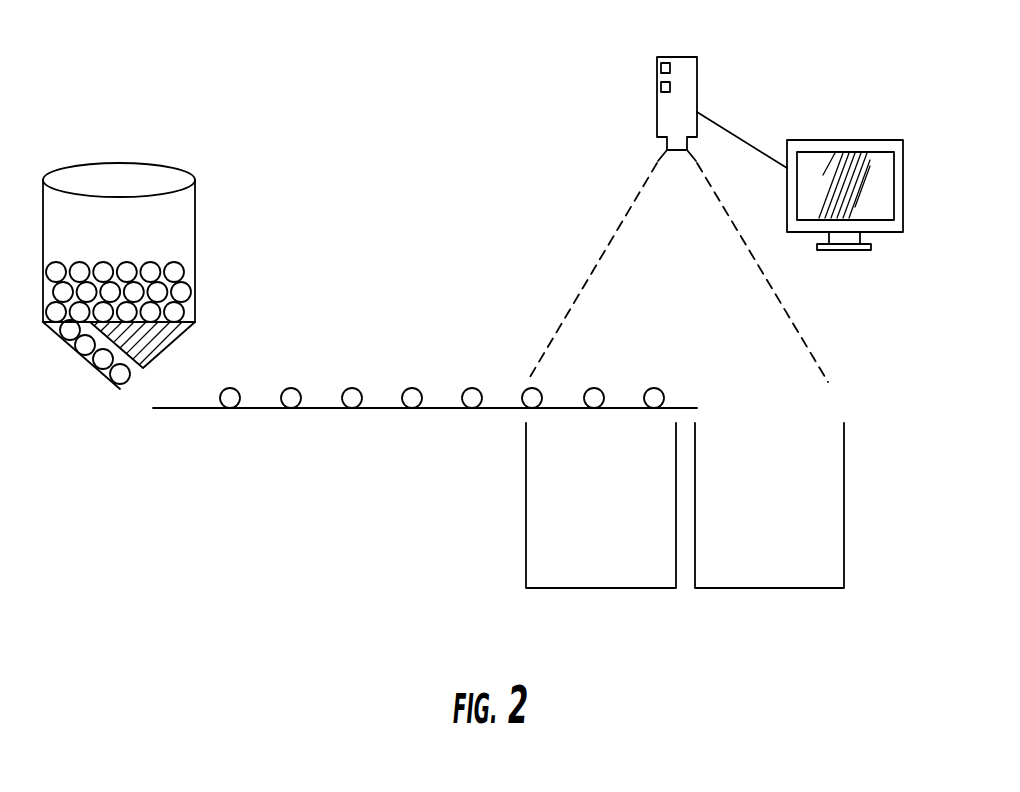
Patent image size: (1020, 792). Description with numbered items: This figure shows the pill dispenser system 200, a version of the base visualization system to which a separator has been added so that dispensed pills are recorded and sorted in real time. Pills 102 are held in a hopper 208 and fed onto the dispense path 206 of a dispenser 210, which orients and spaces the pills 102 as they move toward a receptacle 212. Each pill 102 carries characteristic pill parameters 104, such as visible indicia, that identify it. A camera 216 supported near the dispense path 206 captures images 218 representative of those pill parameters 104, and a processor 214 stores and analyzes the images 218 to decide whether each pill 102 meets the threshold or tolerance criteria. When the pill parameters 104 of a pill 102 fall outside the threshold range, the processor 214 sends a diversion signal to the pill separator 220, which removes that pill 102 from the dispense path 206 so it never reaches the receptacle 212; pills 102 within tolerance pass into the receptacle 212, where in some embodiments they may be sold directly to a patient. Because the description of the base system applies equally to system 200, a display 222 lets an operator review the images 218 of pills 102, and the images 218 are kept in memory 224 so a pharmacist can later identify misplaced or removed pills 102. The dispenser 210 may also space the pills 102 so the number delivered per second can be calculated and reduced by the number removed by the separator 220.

The pill dispenser system 200 is at (364, 65).
The pill 102 is at (187, 292).
The pill parameters 104 is at (294, 371).
The dispense path 206 is at (416, 371).
The hopper 208 is at (177, 233).
The dispenser 210 is at (383, 410).
The receptacle 212 is at (765, 589).
The processor 214 is at (661, 69).
The camera 216 is at (692, 97).
The images 218 is at (882, 116).
The pill separator 220 is at (595, 589).
The display screen 222 is at (813, 163).
The second sensor 224 is at (661, 88).